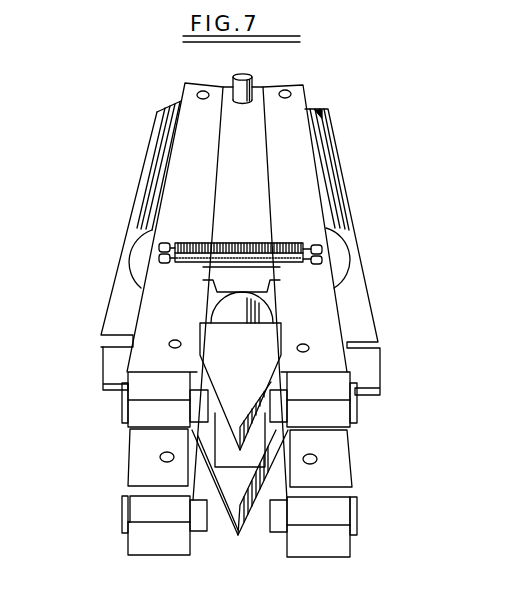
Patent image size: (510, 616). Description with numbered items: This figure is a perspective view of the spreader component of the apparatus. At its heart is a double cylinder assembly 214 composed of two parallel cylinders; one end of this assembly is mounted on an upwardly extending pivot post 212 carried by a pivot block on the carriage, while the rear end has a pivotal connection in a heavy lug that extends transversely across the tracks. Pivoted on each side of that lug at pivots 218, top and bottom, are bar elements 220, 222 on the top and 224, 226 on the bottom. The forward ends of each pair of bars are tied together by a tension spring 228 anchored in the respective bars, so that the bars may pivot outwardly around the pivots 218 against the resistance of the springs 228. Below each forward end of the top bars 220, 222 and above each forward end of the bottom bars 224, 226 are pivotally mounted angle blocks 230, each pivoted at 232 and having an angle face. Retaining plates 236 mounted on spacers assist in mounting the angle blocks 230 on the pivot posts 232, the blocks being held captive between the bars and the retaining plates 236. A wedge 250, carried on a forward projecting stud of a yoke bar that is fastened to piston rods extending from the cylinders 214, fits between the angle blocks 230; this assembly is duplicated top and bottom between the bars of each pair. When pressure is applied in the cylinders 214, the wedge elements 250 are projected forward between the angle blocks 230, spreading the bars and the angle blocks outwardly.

The pivot post 212 is at (248, 82).
The double cylinder assembly 214 is at (155, 170).
The pivot 218 is at (203, 91).
The bar element 220 is at (290, 107).
The bar element 222 is at (193, 102).
The bar element 224 is at (343, 546).
The bar element 226 is at (140, 543).
The tension spring 228 is at (233, 244).
The angle block 230 is at (124, 413).
The pivot post 232 is at (169, 343).
The retaining plate 236 is at (130, 432).
The wedge 250 is at (262, 364).